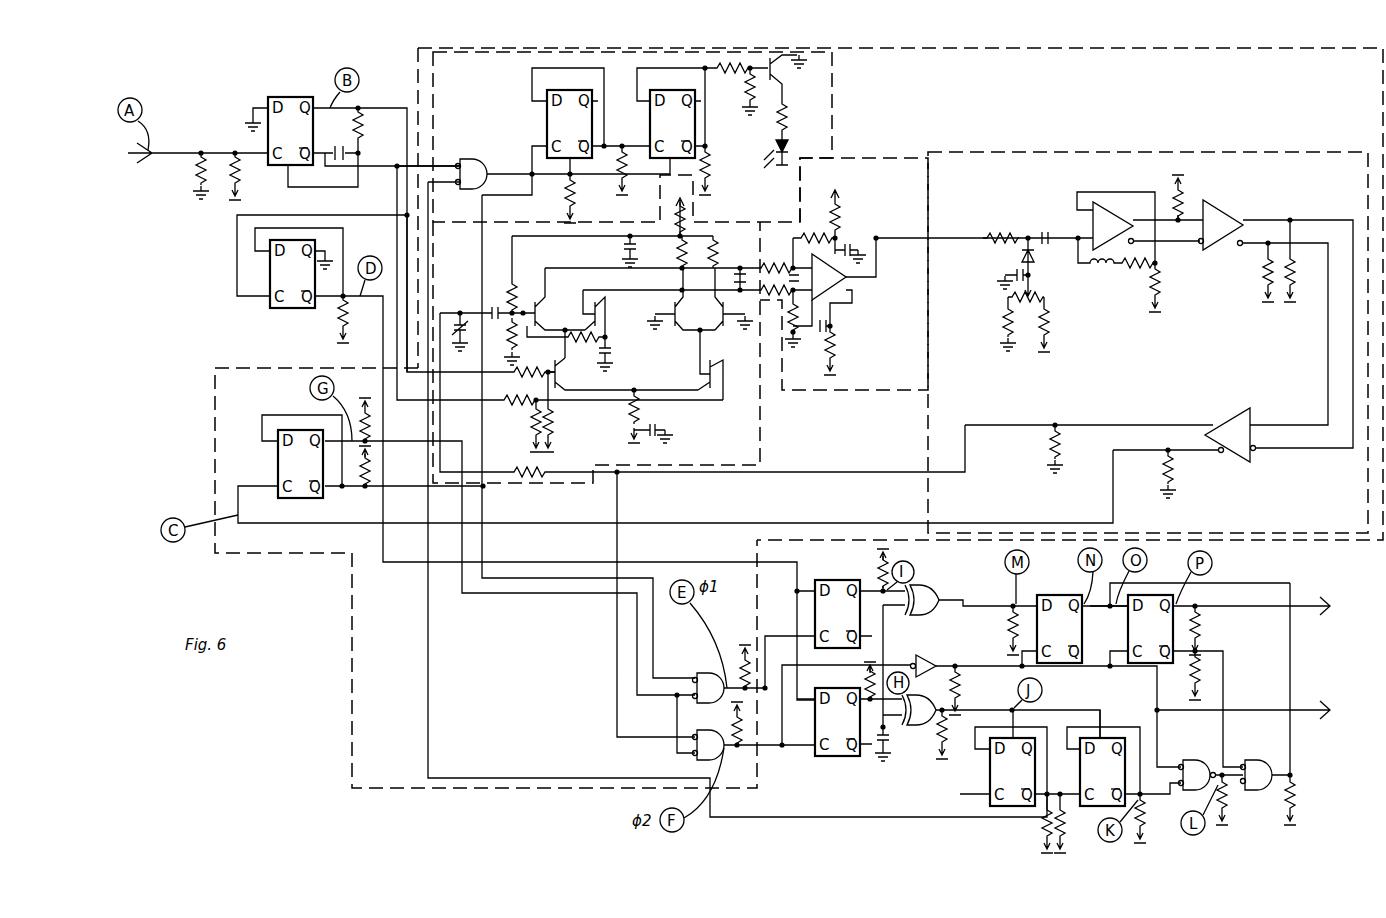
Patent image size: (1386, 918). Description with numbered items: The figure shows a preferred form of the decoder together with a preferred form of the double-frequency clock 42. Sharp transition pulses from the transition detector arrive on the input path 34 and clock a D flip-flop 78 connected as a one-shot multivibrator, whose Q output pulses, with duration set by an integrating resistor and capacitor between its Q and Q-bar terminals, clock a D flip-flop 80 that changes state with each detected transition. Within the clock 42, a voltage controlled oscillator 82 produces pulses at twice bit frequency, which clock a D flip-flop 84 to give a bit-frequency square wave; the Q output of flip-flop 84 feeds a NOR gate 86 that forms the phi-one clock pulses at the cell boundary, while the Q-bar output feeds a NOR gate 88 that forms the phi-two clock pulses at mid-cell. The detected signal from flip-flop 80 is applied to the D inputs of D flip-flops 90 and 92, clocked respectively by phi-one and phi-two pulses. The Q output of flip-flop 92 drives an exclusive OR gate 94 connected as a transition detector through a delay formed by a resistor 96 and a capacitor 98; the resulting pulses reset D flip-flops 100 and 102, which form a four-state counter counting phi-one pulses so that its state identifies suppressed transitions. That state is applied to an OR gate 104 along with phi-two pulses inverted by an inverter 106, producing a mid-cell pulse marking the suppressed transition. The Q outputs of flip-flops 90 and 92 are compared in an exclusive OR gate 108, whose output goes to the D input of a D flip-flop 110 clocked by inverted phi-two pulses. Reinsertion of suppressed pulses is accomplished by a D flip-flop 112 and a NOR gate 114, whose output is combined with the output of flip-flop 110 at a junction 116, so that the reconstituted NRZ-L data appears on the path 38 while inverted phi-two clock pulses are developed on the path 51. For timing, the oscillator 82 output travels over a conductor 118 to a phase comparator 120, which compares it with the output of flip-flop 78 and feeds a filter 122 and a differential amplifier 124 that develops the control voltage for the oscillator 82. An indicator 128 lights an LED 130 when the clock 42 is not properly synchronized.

The input path 34 is at (200, 150).
The path 38 is at (1316, 603).
The 2F clock 42 is at (418, 48).
The path 51 is at (1316, 707).
The D flip-flop 78 is at (283, 97).
The D flip-flop 80 is at (281, 309).
The voltage controlled oscillator 82 is at (1020, 199).
The D flip-flop 84 is at (278, 466).
The NOR gate 86 is at (698, 673).
The NOR gate 88 is at (699, 732).
The D flip-flop 90 is at (845, 580).
The D flip-flop 92 is at (848, 690).
The exclusive OR gate 94 is at (925, 700).
The resistor 96 is at (881, 748).
The capacitor 98 is at (893, 756).
The D flip-flop 100 is at (990, 777).
The D flip-flop 102 is at (1118, 738).
The OR gate 104 is at (1197, 760).
The inverter 106 is at (927, 657).
The exclusive OR gate 108 is at (925, 590).
The D flip-flop 110 is at (1062, 588).
The D flip-flop 112 is at (1154, 595).
The NOR gate 114 is at (1264, 760).
The junction 116 is at (1110, 610).
The conductor 118 is at (612, 478).
The phase comparator 120 is at (737, 449).
The filter 122 is at (766, 228).
The differential amplifier 124 is at (911, 334).
The indicator 128 is at (486, 104).
The LED 130 is at (786, 147).